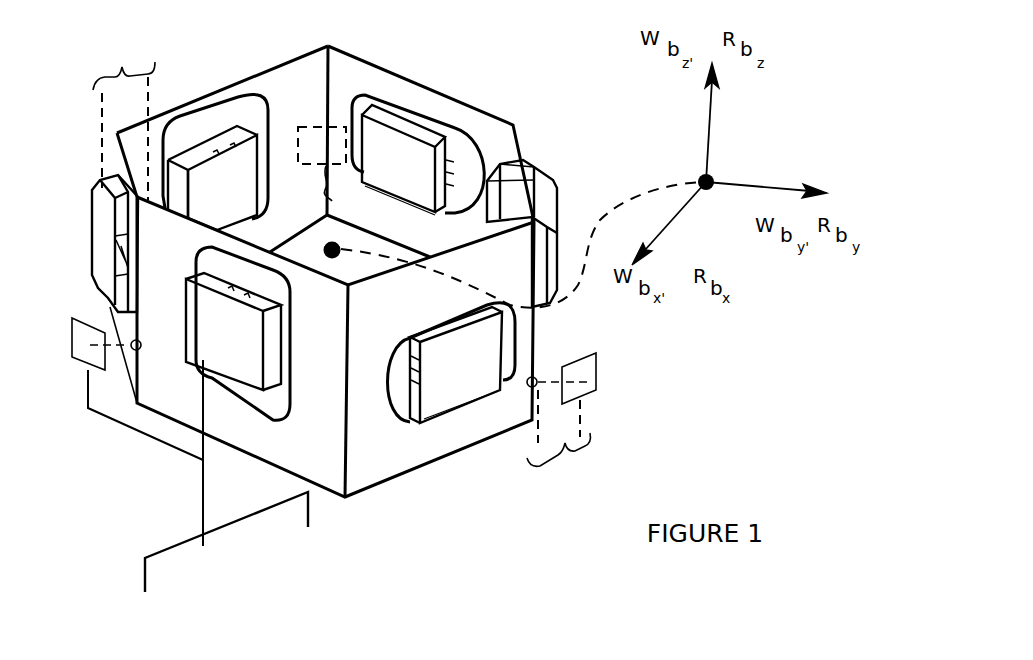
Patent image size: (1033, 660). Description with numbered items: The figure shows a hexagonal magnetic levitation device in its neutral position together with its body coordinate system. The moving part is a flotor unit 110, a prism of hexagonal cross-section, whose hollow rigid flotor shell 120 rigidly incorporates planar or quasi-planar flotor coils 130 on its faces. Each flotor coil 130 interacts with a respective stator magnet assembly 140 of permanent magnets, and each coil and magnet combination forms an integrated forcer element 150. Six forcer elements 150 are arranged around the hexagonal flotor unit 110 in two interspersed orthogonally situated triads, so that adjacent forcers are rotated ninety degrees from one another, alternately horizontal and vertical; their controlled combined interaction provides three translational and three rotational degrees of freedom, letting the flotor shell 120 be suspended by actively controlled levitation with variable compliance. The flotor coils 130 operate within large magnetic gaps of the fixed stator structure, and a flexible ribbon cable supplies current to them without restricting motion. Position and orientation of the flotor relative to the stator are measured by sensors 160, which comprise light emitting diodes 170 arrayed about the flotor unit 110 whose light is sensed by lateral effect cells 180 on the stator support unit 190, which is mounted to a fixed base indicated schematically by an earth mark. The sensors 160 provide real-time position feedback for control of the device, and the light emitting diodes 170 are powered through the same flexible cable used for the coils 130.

The flotor unit 110 is at (473, 108).
The flotor shell 120 is at (233, 88).
The flotor coil 130 is at (345, 50).
The stator magnet assembly 140 is at (473, 126).
The forcer element 150 is at (113, 222).
The sensor 160 is at (558, 438).
The light emitting diode 170 is at (537, 378).
The lateral effect cell 180 is at (596, 382).
The stator support unit 190 is at (164, 551).